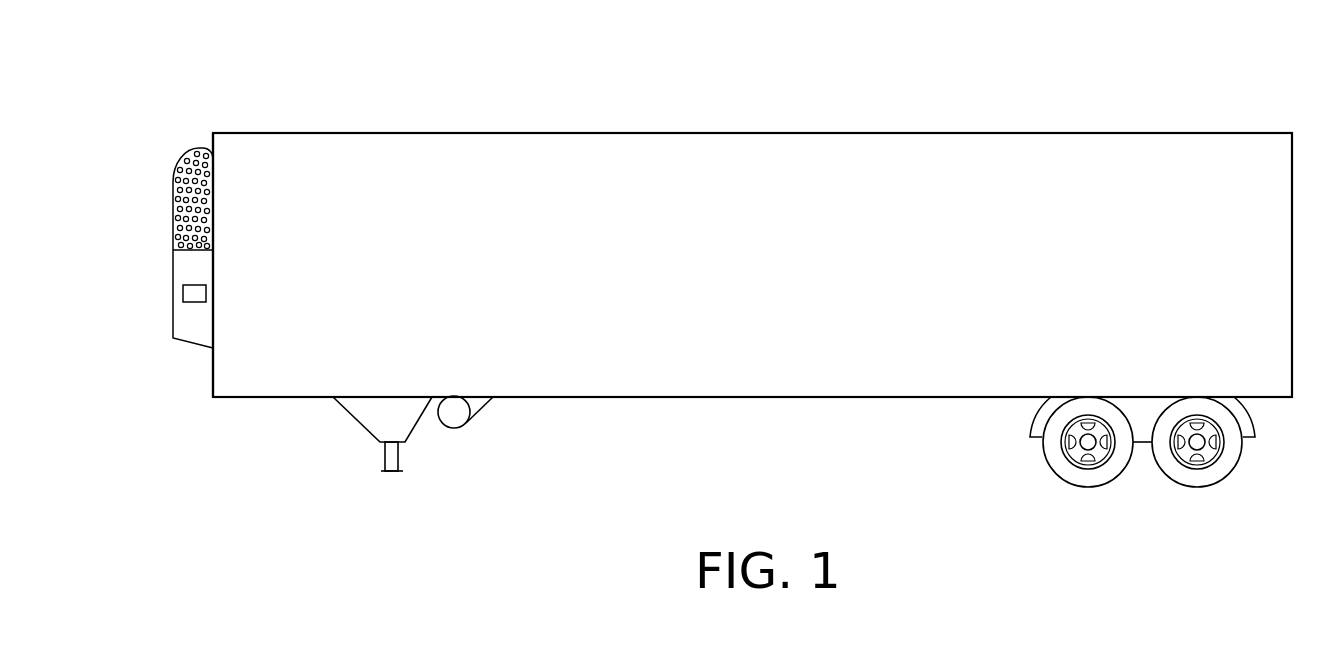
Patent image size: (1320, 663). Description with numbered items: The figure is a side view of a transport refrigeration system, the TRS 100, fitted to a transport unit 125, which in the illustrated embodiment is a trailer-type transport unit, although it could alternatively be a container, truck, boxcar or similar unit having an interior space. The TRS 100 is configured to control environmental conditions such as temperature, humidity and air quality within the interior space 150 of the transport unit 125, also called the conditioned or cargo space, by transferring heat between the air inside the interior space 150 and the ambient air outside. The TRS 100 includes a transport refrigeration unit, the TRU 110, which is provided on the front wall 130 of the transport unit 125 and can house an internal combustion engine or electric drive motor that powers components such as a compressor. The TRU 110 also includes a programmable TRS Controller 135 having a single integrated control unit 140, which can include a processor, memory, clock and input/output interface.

The transport refrigeration system (TRS) 100 is at (476, 44).
The transport refrigeration unit (TRU) 110 is at (182, 156).
The transport unit 125 is at (386, 132).
The front wall 130 is at (213, 379).
The TRS Controller 135 is at (121, 314).
The single integrated control unit 140 is at (189, 303).
The interior space 150 is at (665, 387).